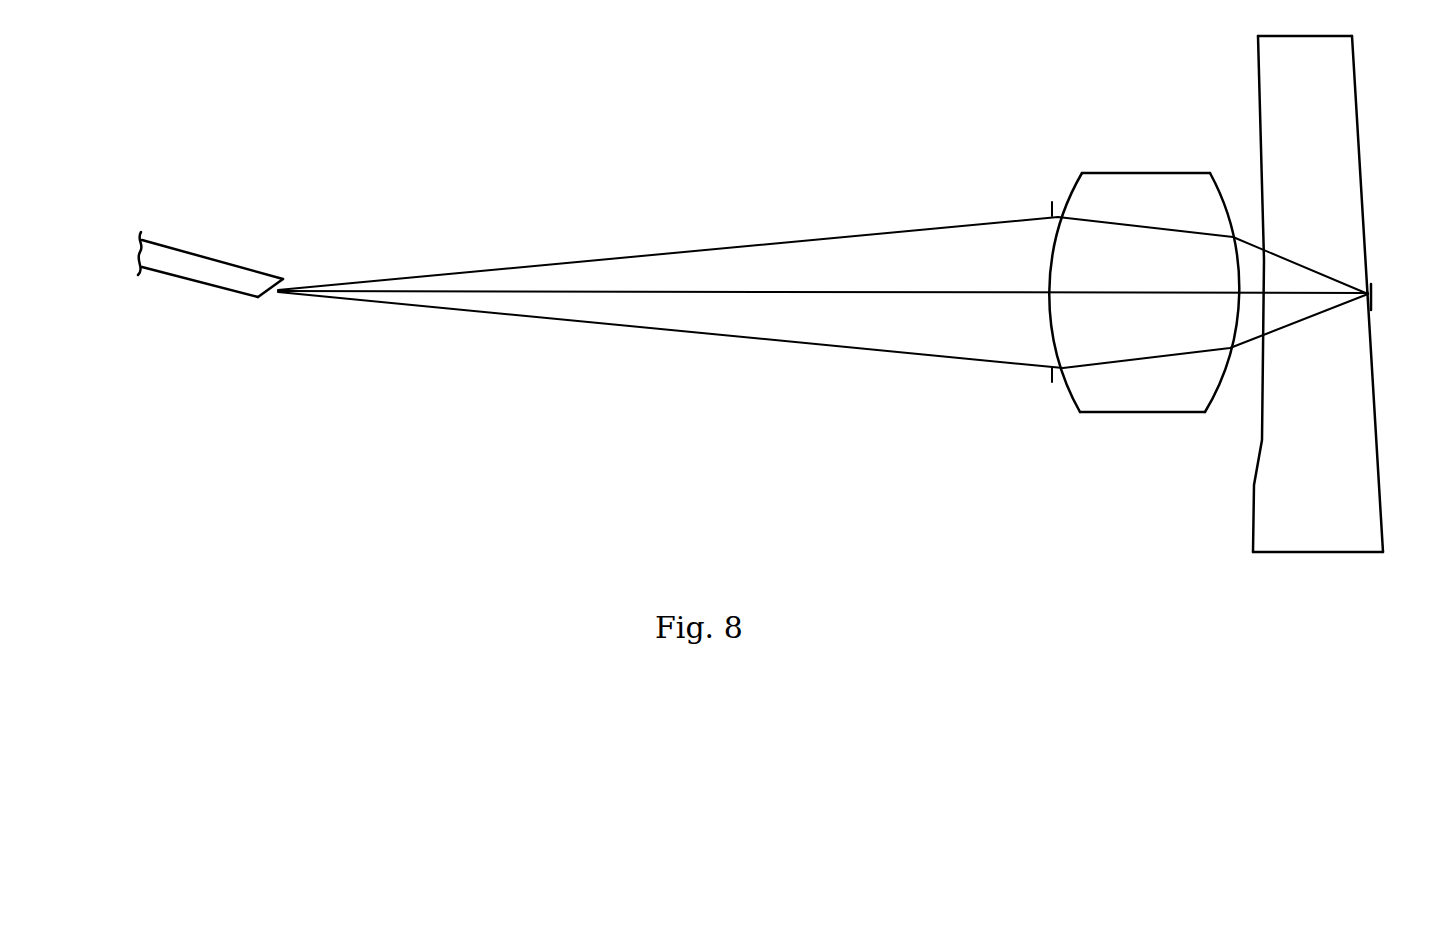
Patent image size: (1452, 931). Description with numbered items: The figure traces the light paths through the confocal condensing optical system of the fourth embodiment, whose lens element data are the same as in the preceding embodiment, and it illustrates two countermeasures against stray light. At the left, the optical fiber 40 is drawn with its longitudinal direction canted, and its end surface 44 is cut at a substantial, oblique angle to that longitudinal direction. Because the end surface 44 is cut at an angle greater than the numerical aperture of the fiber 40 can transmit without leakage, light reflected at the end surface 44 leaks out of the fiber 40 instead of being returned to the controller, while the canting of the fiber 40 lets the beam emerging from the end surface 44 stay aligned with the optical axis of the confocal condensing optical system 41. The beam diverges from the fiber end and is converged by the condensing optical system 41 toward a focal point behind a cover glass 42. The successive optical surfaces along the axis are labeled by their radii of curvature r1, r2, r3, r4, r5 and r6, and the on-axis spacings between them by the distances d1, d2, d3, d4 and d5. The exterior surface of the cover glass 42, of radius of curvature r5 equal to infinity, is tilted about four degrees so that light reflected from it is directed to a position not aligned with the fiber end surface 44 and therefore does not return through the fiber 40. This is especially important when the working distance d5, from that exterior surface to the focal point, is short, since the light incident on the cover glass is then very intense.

The optical fiber 40 is at (205, 283).
The optical fiber end surface 44 is at (291, 303).
The confocal condensing optical system 41 is at (1142, 291).
The optical element (glass plate) 42 is at (1343, 338).
The radius of curvature of fiber end face r1 is at (284, 284).
The radius of curvature of lens first surface r2 is at (1062, 215).
The radius of curvature of lens second surface r3 is at (1219, 259).
The radius of curvature of plate first surface r4 is at (1263, 225).
The radius of curvature of the cover glass exterior surface r5 is at (1360, 157).
The radius of curvature of image surface r6 is at (1373, 297).
The distance fiber to lens d1 is at (836, 294).
The lens thickness d2 is at (1135, 294).
The distance lens to plate d3 is at (1250, 295).
The plate thickness d4 is at (1320, 295).
The working distance d5 is at (1376, 300).